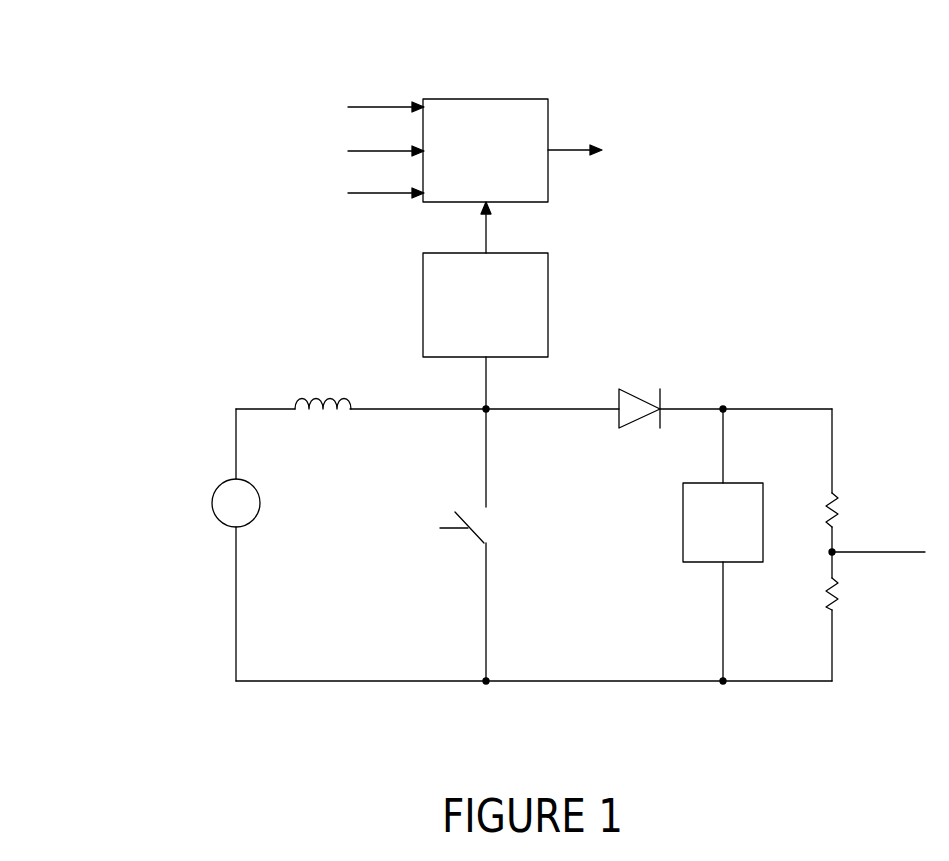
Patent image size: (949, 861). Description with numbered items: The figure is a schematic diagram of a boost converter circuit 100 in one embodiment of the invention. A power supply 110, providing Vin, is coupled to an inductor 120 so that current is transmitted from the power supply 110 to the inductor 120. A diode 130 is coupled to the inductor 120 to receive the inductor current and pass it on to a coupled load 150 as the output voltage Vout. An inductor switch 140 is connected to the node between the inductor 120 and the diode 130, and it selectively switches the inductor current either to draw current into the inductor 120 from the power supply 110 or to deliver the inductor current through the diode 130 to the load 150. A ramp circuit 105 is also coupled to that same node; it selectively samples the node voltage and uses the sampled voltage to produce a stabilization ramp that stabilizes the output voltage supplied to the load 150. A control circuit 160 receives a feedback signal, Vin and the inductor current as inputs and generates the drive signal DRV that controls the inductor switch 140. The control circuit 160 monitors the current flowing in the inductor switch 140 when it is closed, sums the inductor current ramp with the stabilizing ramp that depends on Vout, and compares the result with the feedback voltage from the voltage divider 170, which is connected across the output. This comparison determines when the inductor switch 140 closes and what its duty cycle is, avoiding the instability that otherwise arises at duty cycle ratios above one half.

The boost converter circuit 100 is at (151, 50).
The control circuit 160 is at (473, 195).
The ramp circuit 105 is at (473, 350).
The inductor 120 is at (330, 398).
The power supply 110 is at (212, 513).
The inductor switch 140 is at (487, 528).
The diode 130 is at (636, 390).
The load 150 is at (710, 548).
The voltage divider 170 is at (862, 515).